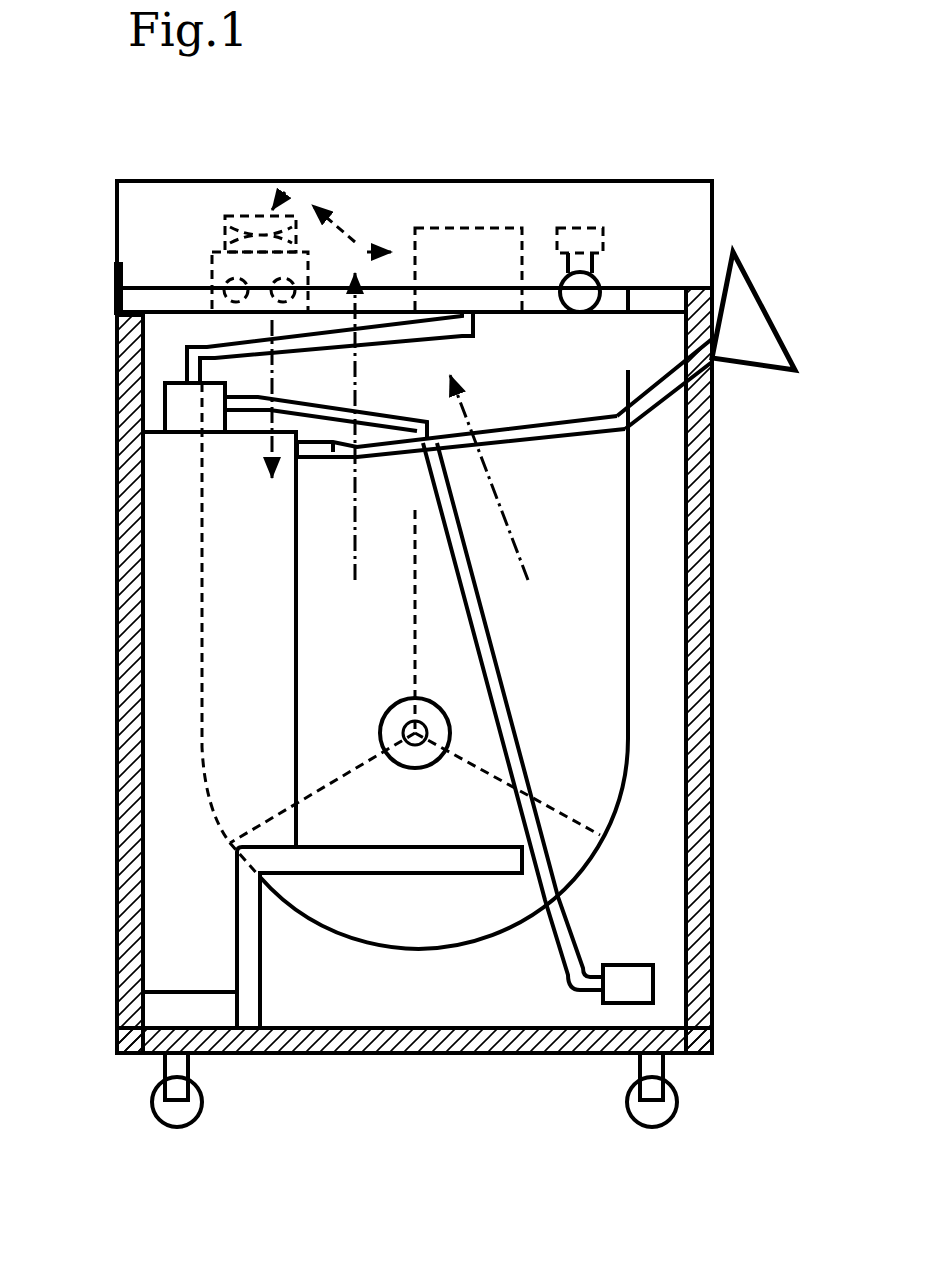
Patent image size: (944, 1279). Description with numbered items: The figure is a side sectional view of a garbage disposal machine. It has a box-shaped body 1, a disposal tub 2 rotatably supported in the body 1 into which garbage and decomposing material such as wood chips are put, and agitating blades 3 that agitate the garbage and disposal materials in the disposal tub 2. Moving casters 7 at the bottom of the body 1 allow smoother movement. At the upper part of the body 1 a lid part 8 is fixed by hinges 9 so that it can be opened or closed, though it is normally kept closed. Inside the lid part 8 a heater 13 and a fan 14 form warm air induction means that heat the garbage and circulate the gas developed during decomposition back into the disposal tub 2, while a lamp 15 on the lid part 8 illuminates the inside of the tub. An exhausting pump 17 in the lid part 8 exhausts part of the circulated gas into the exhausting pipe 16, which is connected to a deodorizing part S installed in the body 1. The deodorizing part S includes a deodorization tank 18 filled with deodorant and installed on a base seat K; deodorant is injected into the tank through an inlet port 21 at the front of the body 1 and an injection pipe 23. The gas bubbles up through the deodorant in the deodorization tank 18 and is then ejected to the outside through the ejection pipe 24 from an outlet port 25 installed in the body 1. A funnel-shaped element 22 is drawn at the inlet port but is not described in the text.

The body 1 is at (713, 717).
The disposal tub 2 is at (628, 753).
The agitating blades 3 is at (354, 755).
The moving casters 7 is at (675, 1088).
The lid part 8 is at (392, 178).
The hinges 9 is at (117, 298).
The heater 13 is at (215, 273).
The fan 14 is at (228, 235).
The lamp 15 is at (592, 227).
The exhausting pipe 16 is at (468, 340).
The exhausting pump 17 is at (472, 227).
The deodorization tank 18 is at (300, 658).
The inlet port 21 is at (712, 365).
The funnel / hopper 22 is at (770, 312).
The injection pipe 23 is at (522, 447).
The ejection pipe 24 is at (553, 933).
The outlet port 25 is at (625, 965).
The deodorizing part S is at (178, 598).
The base seat K is at (262, 955).